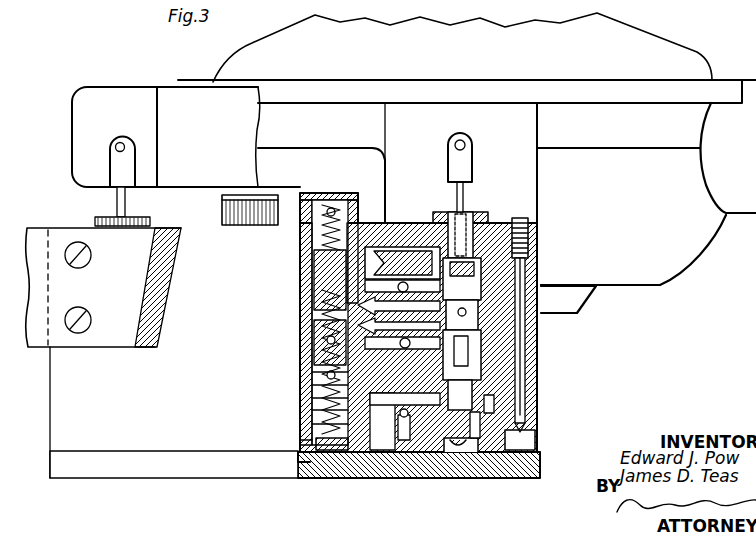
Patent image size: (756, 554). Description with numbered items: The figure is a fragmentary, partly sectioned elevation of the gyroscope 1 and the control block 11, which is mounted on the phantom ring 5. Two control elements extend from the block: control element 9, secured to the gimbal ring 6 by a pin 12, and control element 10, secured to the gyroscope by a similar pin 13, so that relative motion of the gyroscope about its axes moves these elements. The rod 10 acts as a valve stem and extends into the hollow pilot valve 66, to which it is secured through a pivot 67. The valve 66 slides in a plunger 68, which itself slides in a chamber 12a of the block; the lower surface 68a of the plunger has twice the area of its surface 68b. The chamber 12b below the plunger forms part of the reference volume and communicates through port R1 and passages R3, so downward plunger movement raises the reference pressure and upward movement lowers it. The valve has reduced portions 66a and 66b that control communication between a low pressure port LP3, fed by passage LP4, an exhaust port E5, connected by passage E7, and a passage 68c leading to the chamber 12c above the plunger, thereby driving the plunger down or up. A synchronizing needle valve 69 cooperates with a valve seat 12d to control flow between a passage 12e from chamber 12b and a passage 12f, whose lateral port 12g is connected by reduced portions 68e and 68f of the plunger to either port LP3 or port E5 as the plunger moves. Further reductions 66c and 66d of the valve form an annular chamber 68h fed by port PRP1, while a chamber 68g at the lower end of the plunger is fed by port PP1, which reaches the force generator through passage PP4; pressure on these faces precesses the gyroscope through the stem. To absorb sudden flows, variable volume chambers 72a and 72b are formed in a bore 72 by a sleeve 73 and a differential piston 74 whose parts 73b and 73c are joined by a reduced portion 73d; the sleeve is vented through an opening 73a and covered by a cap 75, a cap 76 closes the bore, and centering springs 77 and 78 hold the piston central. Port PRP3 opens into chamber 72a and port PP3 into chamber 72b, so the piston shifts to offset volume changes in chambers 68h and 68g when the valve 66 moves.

The support bracket 1 is at (462, 47).
The phantom ring 5 is at (46, 240).
The gimbal ring 6 is at (90, 118).
The control element 9 is at (120, 162).
The control element 10 is at (455, 198).
The control block 11 is at (545, 275).
The pin 12 is at (120, 142).
The plunger chamber 12a is at (541, 398).
The reference volume chamber 12b is at (449, 445).
The chamber 12c is at (541, 262).
The valve seat 12d is at (541, 418).
The passage 12e is at (541, 443).
The passage 12f is at (541, 352).
The port 12g is at (532, 345).
The pin 13 is at (460, 140).
The pilot valve 66 is at (470, 222).
The reduced portion 66a is at (541, 318).
The reduced portion 66b is at (541, 390).
The reduced diameter portion 66c is at (541, 235).
The reduced diameter portion 66d is at (482, 225).
The pivot 67 is at (575, 287).
The plunger 68 is at (540, 456).
The lower surface 68a is at (522, 478).
The surface 68b is at (405, 228).
The passage 68c is at (541, 327).
The reduced portion 68e is at (590, 296).
The reduced portion 68f is at (541, 374).
The chamber 68g is at (481, 435).
The annular chamber 68h is at (430, 225).
The synchronizing valve 69 is at (545, 280).
The bore 72 is at (315, 388).
The variable volume chamber 72a is at (320, 400).
The variable volume chamber 72b is at (300, 465).
The sleeve 73 is at (312, 270).
The opening 73a is at (366, 200).
The piston part 73b is at (300, 256).
The piston part 73c is at (312, 425).
The reduced portion 73d is at (255, 348).
The differential piston 74 is at (320, 410).
The cap 75 is at (302, 195).
The cap 76 is at (298, 457).
The centering spring 77 is at (245, 197).
The centering spring 78 is at (305, 435).
The precessing pressure port PP1 is at (310, 445).
The precessing pressure port PP3 is at (345, 450).
The precessing pressure passage PP4 is at (322, 430).
The precessing reference pressure port PRP1 is at (321, 195).
The precessing reference pressure port PRP3 is at (330, 340).
The low pressure port LP3 is at (350, 322).
The low pressure passage LP4 is at (355, 302).
The exhaust port E5 is at (330, 360).
The exhaust passage E7 is at (320, 374).
The reference volume port R1 is at (410, 447).
The reference volume passages R3 is at (391, 450).